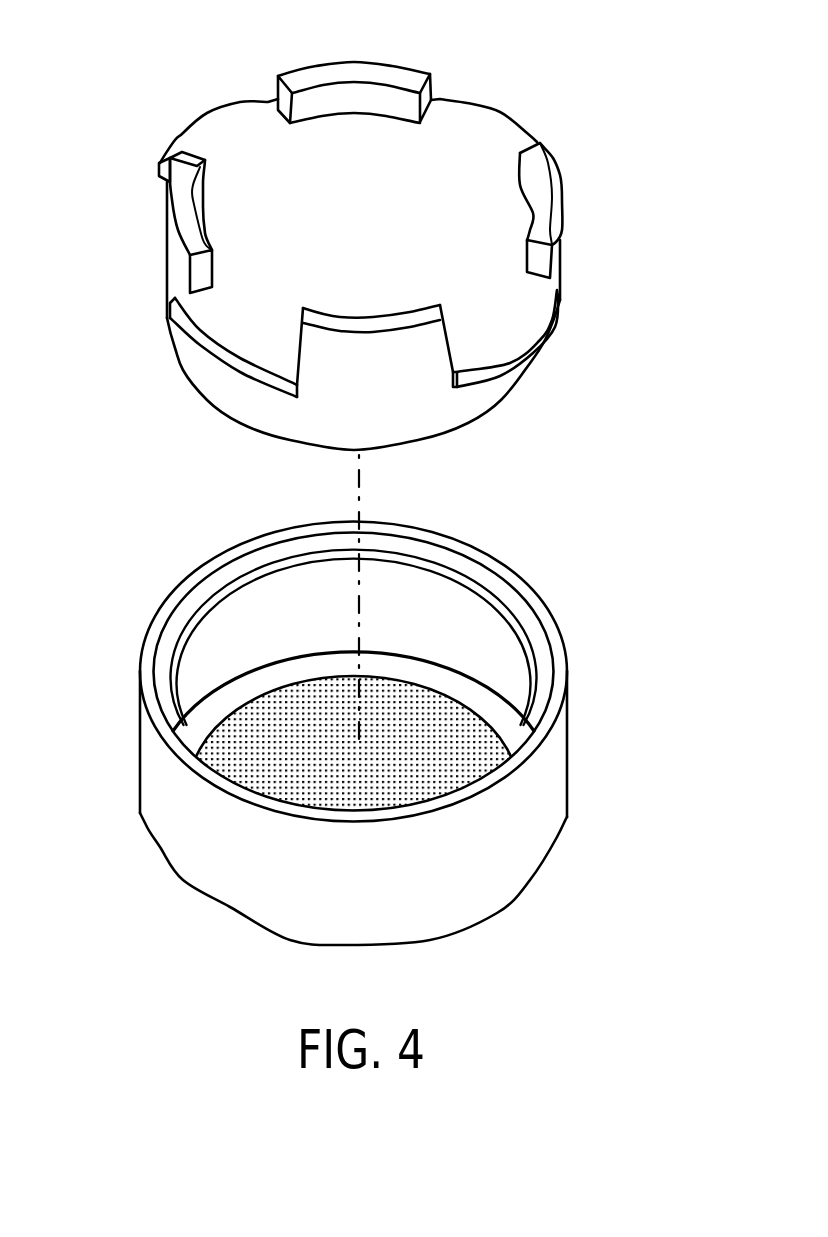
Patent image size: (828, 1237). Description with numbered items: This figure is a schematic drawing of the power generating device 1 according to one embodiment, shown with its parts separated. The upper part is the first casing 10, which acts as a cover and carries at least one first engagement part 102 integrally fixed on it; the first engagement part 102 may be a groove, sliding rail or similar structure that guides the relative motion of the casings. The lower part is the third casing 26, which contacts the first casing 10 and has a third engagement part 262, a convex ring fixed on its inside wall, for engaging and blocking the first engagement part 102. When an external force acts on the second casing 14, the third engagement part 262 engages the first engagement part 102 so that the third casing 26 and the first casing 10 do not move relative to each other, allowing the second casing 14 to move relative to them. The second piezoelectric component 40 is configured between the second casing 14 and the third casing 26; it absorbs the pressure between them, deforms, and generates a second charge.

The power generating device 1 is at (172, 68).
The first casing 10 is at (515, 120).
The second casing 14 is at (561, 175).
The first engagement part 102 is at (562, 302).
The third casing 26 is at (567, 733).
The third engagement part 262 is at (527, 618).
The second piezoelectric component 40 is at (198, 745).